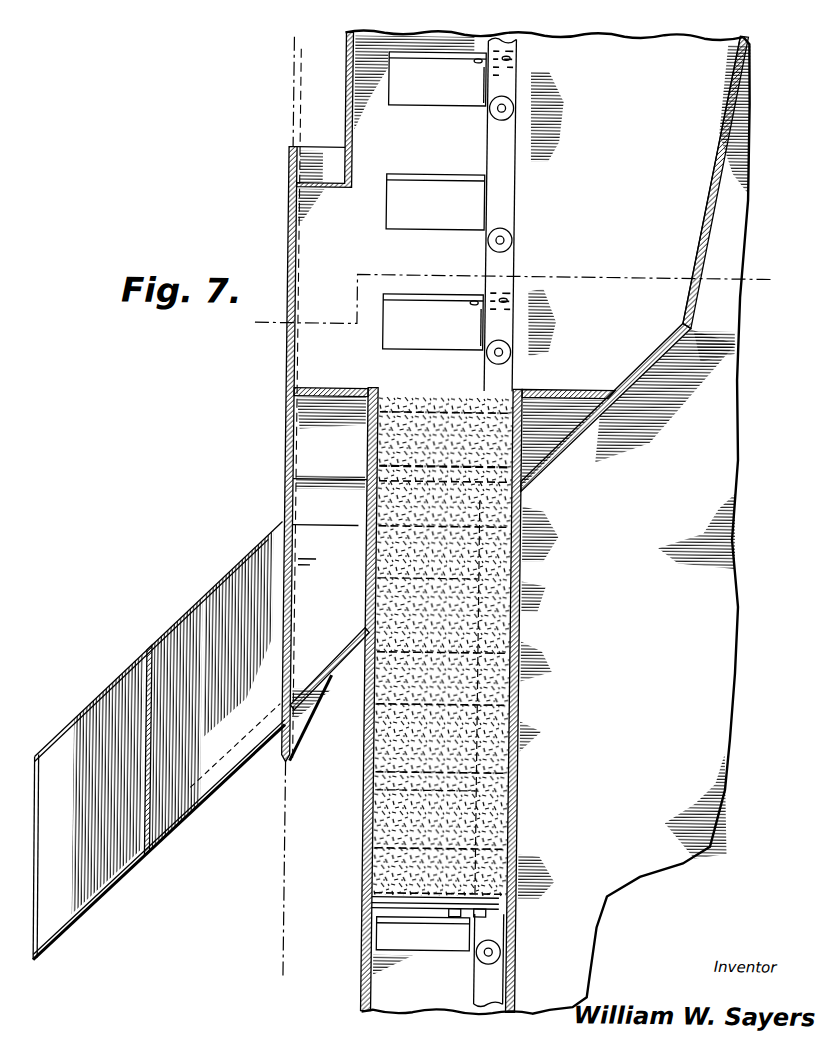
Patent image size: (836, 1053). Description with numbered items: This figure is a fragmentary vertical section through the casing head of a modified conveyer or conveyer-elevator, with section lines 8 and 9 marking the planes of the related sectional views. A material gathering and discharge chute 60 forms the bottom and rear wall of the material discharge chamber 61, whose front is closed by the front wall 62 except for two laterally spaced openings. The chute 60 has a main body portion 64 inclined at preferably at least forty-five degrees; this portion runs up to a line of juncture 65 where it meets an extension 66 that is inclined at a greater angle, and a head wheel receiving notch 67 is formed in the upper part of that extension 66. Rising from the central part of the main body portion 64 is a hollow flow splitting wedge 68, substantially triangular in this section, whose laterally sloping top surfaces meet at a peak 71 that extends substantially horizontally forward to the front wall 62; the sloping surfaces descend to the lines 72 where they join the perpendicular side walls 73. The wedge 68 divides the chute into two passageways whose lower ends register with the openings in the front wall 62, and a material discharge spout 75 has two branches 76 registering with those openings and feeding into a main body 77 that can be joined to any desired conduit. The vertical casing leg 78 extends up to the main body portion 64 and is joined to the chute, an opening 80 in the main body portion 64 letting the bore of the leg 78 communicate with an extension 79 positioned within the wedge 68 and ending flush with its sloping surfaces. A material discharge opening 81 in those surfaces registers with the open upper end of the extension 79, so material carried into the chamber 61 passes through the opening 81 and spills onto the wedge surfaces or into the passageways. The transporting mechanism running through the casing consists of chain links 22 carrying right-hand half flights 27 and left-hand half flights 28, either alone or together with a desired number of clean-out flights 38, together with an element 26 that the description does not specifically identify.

The section line 8- 8 is at (272, 50).
The section line 9- 9 is at (257, 305).
The chain links 22 is at (513, 259).
The container 26 is at (433, 322).
The right-hand half flight 27 is at (360, 722).
The left-hand half flight 28 is at (368, 553).
The clean-out flight 38 is at (366, 813).
The material gathering and discharge chute 60 is at (640, 367).
The material discharge chamber 61 is at (332, 333).
The front wall 62 is at (286, 253).
The main body portion 64 is at (613, 387).
The line of juncture 65 is at (676, 320).
The extension 66 is at (695, 223).
The head wheel receiving notch 67 is at (716, 106).
The flow splitting wedge 68 is at (324, 386).
The peak 71 is at (543, 391).
The lines 72 is at (342, 525).
The perpendicular side walls 73 is at (320, 570).
The material discharge spout 75 is at (218, 789).
The branches 76 is at (173, 722).
The main body 77 is at (114, 889).
The vertical casing leg 78 is at (524, 796).
The extension 79 is at (368, 452).
The opening 80 is at (388, 615).
The material discharge opening 81 is at (380, 387).